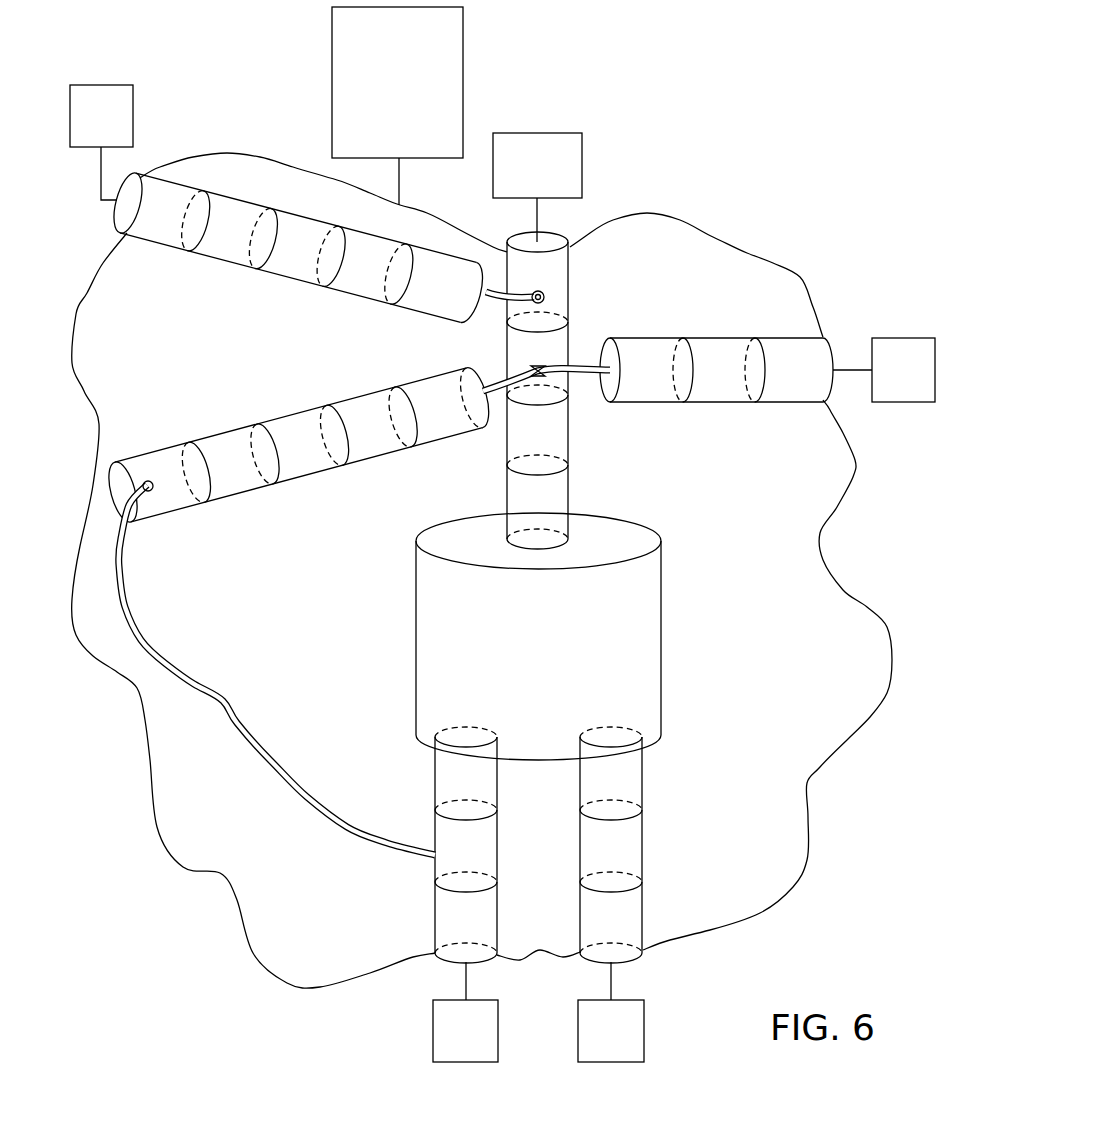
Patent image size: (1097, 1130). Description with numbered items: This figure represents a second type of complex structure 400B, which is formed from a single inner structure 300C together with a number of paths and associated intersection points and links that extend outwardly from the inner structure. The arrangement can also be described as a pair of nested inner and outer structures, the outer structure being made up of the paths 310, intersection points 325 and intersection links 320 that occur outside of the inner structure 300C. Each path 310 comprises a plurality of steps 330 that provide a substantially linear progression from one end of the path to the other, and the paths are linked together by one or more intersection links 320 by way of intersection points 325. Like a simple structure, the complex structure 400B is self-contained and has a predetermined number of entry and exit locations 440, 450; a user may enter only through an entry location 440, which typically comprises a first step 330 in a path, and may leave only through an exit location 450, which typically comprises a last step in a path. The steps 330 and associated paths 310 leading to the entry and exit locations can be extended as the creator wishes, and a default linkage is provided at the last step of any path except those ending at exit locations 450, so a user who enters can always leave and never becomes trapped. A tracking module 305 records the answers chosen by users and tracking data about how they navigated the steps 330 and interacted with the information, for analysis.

The complex structure 400B is at (705, 110).
The tracking module 305 is at (378, 127).
The entry location 440 is at (517, 192).
The exit location 450 is at (632, 1057).
The inner structure 300C is at (416, 628).
The path 310 is at (487, 425).
The intersection link 320 is at (496, 305).
The intersection point 325 is at (548, 296).
The step 330 is at (291, 287).